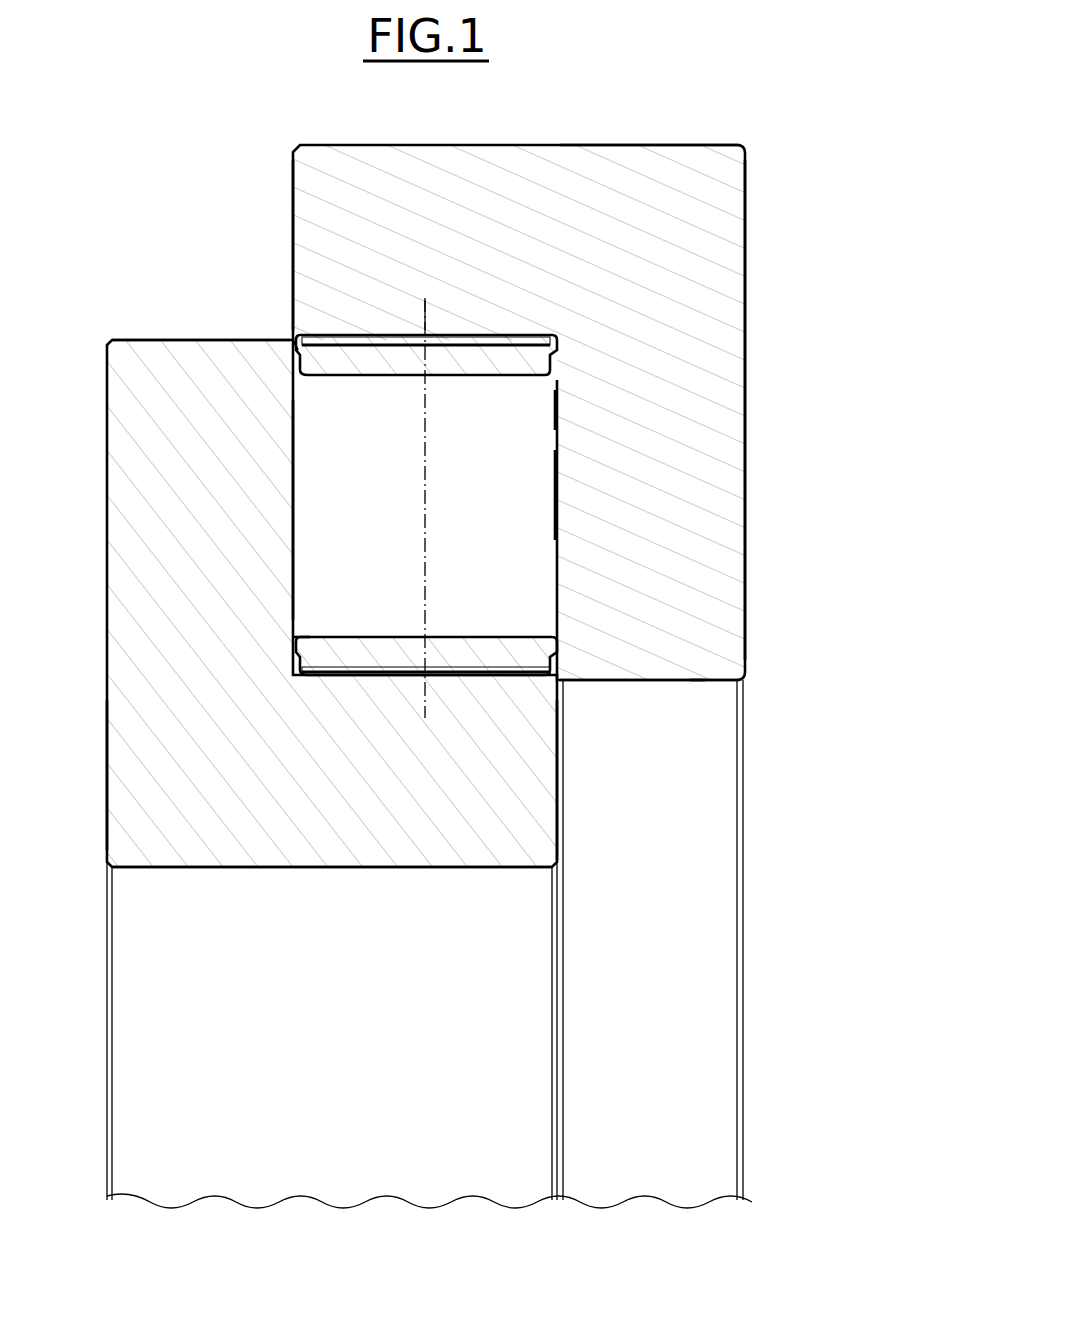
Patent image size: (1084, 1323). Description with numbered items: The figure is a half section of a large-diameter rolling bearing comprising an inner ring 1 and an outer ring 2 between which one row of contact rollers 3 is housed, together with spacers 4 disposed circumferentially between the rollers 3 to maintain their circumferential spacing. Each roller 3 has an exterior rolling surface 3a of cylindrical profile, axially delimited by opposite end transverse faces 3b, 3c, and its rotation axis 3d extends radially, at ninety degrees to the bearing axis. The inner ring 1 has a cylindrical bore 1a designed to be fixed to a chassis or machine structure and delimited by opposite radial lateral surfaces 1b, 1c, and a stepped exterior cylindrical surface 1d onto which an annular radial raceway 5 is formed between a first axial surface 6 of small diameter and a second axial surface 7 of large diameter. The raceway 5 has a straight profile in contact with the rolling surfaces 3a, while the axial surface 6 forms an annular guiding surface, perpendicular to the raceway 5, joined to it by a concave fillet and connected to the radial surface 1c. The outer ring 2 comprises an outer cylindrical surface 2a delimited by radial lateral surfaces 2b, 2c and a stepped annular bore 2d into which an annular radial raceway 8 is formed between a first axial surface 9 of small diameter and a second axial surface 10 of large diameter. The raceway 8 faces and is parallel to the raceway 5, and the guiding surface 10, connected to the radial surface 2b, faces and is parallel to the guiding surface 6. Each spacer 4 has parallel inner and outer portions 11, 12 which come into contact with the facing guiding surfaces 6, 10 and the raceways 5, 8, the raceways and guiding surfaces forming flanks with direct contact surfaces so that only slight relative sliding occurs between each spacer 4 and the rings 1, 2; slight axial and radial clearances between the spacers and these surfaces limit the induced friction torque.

The inner ring 1 is at (100, 600).
The bore 1a is at (201, 867).
The radial lateral surface 1b is at (107, 748).
The radial lateral surface 1c is at (557, 825).
The stepped exterior cylindrical surface 1d is at (148, 338).
The outer ring 2 is at (521, 145).
The outer cylindrical surface 2a is at (593, 145).
The radial lateral surface 2b is at (293, 192).
The radial lateral surface 2c is at (745, 248).
The stepped annular bore 2d is at (652, 686).
The contact rollers 3 is at (404, 519).
The exterior rolling surface 3a is at (557, 485).
The end transverse face 3b is at (484, 664).
The end transverse face 3c is at (530, 337).
The rotation axis 3d is at (428, 323).
The spacers 4 is at (393, 330).
The annular radial raceway 5 is at (295, 517).
The first axial surface 6 is at (296, 638).
The second axial surface 7 is at (198, 339).
The annular radial raceway 8 is at (552, 427).
The first axial surface 9 is at (695, 681).
The second axial surface 10 is at (290, 345).
The inner portion 11 is at (404, 664).
The outer portion 12 is at (351, 348).